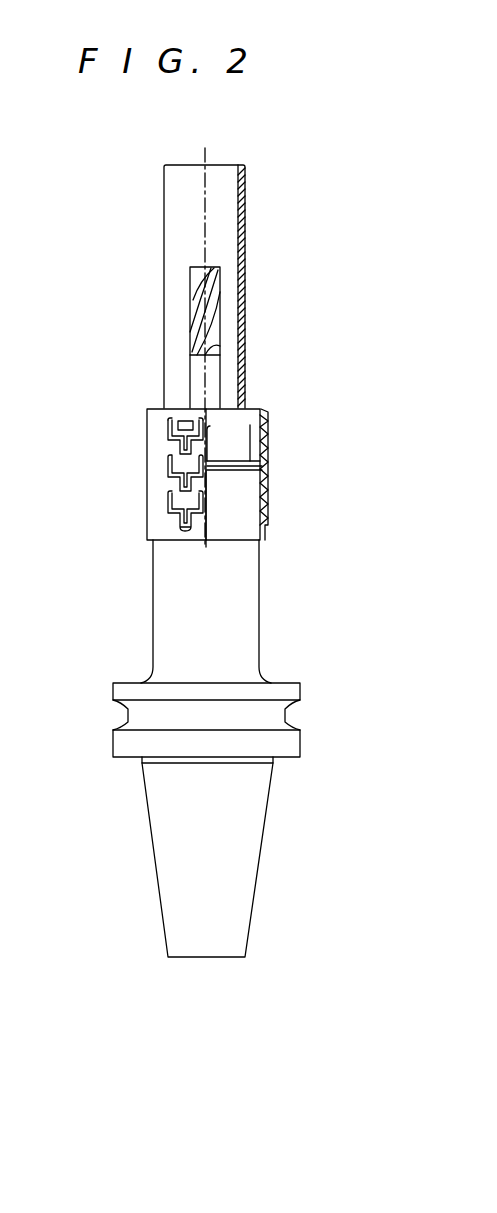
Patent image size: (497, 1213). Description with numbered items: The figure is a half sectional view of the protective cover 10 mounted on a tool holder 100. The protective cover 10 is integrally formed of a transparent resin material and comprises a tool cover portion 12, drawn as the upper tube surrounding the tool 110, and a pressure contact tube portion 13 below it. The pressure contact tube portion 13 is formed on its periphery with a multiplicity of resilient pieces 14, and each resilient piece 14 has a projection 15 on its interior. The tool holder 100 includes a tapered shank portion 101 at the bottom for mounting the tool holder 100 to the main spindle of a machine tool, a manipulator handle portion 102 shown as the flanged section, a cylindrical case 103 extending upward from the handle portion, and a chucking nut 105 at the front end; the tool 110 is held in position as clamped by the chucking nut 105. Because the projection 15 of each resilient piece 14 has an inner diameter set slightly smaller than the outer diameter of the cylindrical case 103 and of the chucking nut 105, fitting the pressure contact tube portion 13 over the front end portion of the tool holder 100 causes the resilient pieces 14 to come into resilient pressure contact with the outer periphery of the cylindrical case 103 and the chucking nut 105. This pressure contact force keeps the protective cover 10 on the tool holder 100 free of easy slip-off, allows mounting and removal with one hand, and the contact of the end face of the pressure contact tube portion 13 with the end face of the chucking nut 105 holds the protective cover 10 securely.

The protective cover 10 is at (258, 276).
The tool cover portion 12 is at (245, 203).
The tool 110 is at (190, 378).
The pressure contact tube portion 13 is at (146, 425).
The chucking nut 105 is at (242, 430).
The resilient pieces 14 is at (262, 452).
The projection 15 is at (260, 512).
The tool holder 100 is at (272, 830).
The cylindrical case 103 is at (259, 633).
The manipulator handle portion 102 is at (287, 742).
The tapered shank portion 101 is at (230, 893).